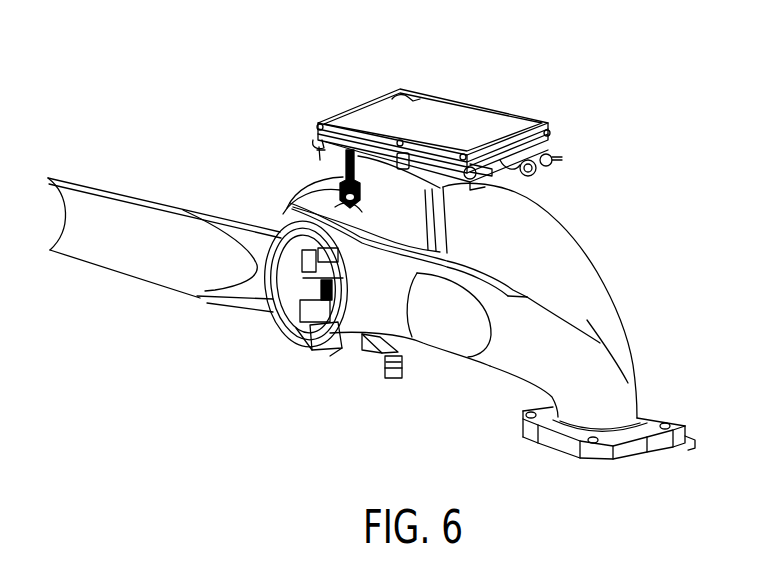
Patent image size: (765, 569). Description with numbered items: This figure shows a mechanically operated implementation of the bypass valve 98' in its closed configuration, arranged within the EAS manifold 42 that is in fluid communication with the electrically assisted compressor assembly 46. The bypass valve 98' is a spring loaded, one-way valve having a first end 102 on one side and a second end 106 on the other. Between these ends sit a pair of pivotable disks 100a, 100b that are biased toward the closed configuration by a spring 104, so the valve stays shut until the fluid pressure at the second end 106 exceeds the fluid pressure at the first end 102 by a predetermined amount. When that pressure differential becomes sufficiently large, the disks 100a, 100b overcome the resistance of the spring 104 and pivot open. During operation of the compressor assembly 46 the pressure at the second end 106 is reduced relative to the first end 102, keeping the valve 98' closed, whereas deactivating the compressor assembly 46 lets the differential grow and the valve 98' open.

The electrically assisted compressor assembly 46 is at (463, 118).
The EAS manifold 42 is at (553, 237).
The bypass valve 98' is at (350, 200).
The second end 106 is at (237, 284).
The pivotable disk 100a is at (297, 318).
The spring 104 is at (310, 335).
The pivotable disk 100b is at (371, 355).
The first end 102 is at (403, 335).